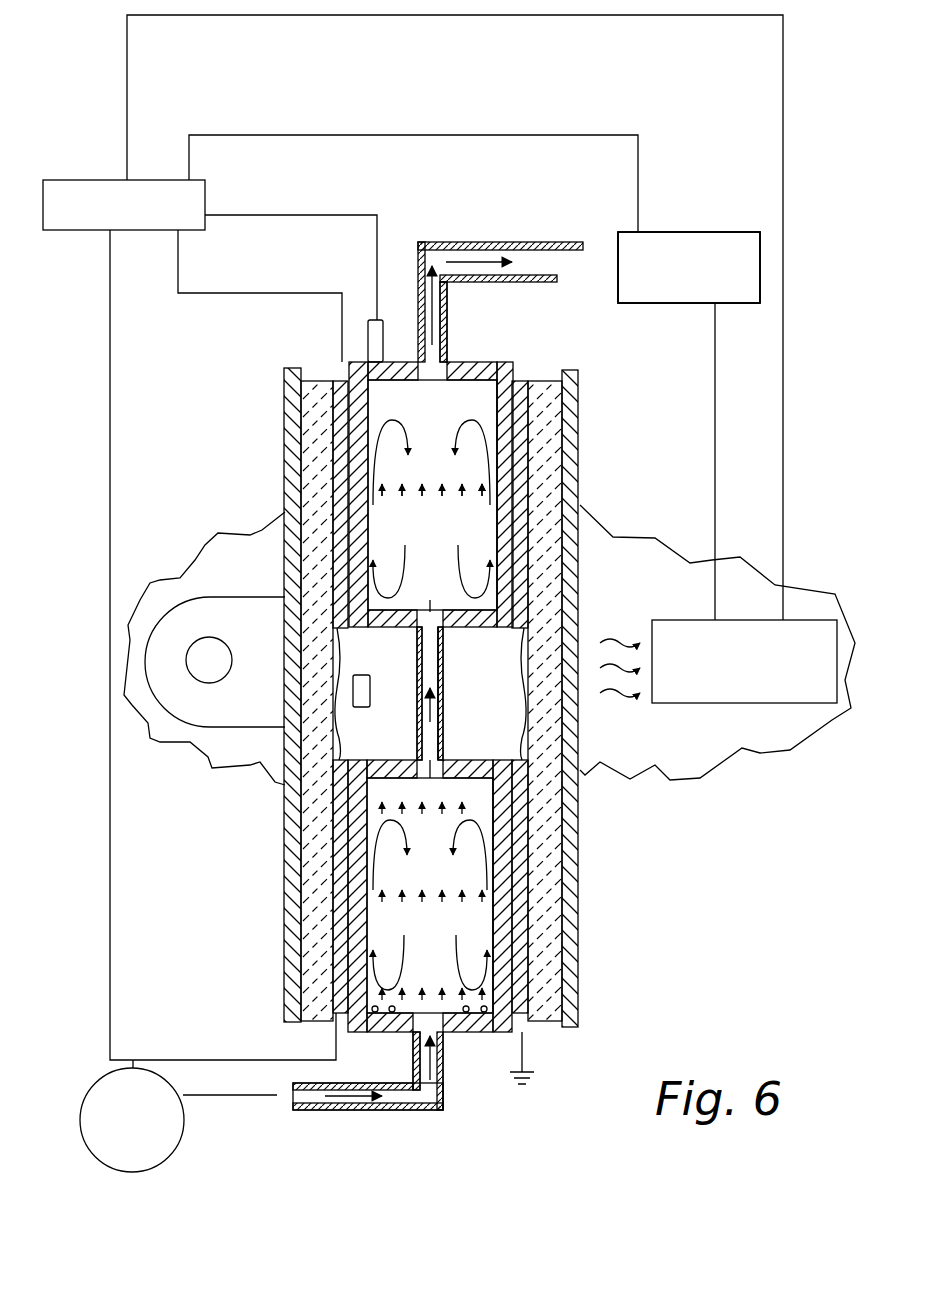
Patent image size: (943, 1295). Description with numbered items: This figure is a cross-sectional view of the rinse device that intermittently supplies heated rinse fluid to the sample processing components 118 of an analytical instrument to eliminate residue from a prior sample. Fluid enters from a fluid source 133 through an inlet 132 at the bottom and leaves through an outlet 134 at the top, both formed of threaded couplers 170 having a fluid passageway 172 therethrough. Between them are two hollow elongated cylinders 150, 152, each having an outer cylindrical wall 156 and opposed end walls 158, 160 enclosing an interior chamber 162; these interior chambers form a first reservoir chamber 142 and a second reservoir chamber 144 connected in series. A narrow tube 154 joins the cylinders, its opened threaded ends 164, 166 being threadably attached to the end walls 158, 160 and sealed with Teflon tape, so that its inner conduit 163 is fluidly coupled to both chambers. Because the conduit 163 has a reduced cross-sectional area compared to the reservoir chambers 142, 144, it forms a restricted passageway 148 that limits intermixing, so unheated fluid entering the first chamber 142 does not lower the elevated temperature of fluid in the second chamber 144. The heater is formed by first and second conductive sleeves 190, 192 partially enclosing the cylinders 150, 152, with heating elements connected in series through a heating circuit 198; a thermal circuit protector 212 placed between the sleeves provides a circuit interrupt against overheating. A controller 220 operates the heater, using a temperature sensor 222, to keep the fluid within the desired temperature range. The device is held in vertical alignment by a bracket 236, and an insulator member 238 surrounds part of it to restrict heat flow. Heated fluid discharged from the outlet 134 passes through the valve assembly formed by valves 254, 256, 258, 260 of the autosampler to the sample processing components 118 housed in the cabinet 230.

The sample processing components 118 is at (796, 617).
The inlet 132 is at (456, 1099).
The fluid source 133 is at (88, 1084).
The outlet 134 is at (413, 664).
The reservoir chamber 142 is at (452, 957).
The second reservoir chamber 144 is at (455, 525).
The restricted passageway 148 is at (416, 722).
The hollow elongated cylinder 150 is at (506, 815).
The hollow elongated cylinder 152 is at (494, 555).
The narrow tube 154 is at (445, 660).
The outer cylindrical wall 156 is at (490, 372).
The end wall 158 is at (445, 632).
The end wall 160 is at (462, 362).
The interior chamber 162 is at (506, 425).
The inner conduit 163 is at (415, 643).
The threaded end 164 is at (428, 775).
The threaded end 166 is at (453, 561).
The threaded coupler 170 is at (468, 246).
The fluid passageway 172 is at (471, 266).
The first conductive sleeve 190 is at (340, 868).
The second conductive sleeve 192 is at (346, 398).
The heating circuit 198 is at (334, 624).
The thermal circuit protector 212 is at (352, 690).
The controller 220 is at (96, 178).
The temperature sensor 222 is at (366, 333).
The cabinet 230 is at (720, 740).
The bracket 236 is at (580, 497).
The insulator member 238 is at (563, 405).
The valve 254 is at (673, 230).
The valve 256 is at (689, 267).
The valve 258 is at (689, 267).
The valve 260 is at (689, 267).